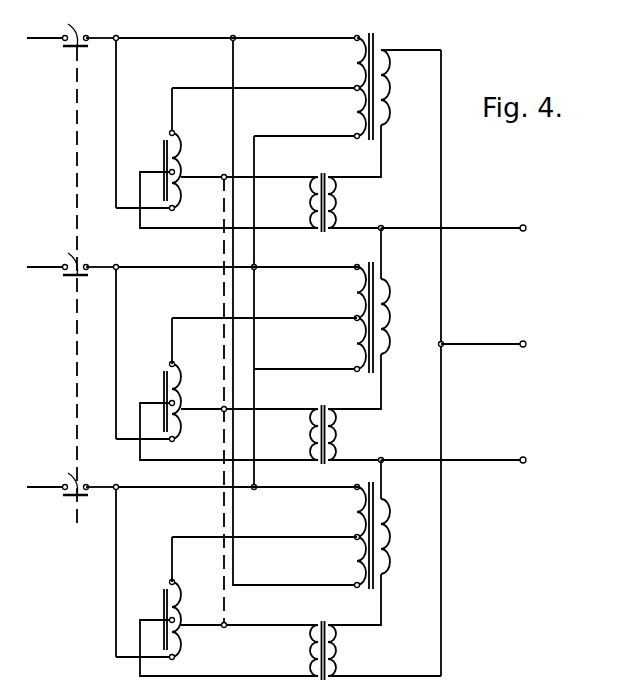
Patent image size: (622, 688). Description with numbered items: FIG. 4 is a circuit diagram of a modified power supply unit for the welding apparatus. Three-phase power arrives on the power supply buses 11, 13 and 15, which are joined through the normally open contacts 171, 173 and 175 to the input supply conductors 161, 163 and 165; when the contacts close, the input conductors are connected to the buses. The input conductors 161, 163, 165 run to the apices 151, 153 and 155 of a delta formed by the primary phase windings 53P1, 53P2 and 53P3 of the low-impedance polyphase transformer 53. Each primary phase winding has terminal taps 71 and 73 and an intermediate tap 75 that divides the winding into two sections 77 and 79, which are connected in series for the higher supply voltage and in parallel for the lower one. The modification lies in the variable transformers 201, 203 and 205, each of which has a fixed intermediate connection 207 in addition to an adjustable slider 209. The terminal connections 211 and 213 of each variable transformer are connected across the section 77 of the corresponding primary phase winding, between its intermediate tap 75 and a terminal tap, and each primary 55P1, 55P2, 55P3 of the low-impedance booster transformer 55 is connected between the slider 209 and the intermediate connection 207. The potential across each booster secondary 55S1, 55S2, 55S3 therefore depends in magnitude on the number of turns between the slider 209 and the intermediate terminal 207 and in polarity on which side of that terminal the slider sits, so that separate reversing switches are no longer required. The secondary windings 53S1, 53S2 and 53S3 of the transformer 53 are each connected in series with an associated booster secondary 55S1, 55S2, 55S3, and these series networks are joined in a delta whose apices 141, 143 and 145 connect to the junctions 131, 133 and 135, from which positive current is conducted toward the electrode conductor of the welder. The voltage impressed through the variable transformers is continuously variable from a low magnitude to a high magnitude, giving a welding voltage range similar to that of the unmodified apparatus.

The power supply bus 11 is at (48, 490).
The power supply bus 13 is at (48, 270).
The power supply bus 15 is at (48, 41).
The normally open contact 171 is at (58, 478).
The normally open contact 173 is at (58, 258).
The normally open contact 175 is at (58, 29).
The input supply conductor 161 is at (101, 487).
The input supply conductor 163 is at (101, 267).
The input supply conductor 165 is at (101, 38).
The apex of primary delta 151 is at (117, 487).
The apex of primary delta 153 is at (117, 267).
The apex of primary delta 155 is at (117, 38).
The variable transformer 201 is at (212, 578).
The variable transformer 203 is at (217, 125).
The variable transformer 205 is at (217, 355).
The fixed intermediate connection 207 is at (171, 172).
The adjustable slider 209 is at (185, 178).
The terminal connection 211 is at (171, 133).
The terminal connection 213 is at (174, 210).
The polyphase transformer 53 is at (412, 330).
The primary phase winding 53P1 is at (359, 513).
The primary phase winding 53P2 is at (359, 294).
The primary phase winding 53P3 is at (359, 64).
The secondary phase winding 53S1 is at (385, 540).
The secondary phase winding 53S2 is at (385, 303).
The secondary phase winding 53S3 is at (385, 97).
The terminal tap 71 is at (355, 36).
The terminal tap 73 is at (356, 139).
The intermediate tap 75 is at (356, 89).
The primary winding section 77 is at (360, 55).
The primary winding section 79 is at (359, 113).
The polyphase booster transformer 55 is at (330, 168).
The booster primary winding 55P1 is at (291, 650).
The booster primary winding 55P2 is at (291, 434).
The booster primary winding 55P3 is at (291, 202).
The booster secondary winding 55S1 is at (338, 649).
The booster secondary winding 55S2 is at (337, 434).
The booster secondary winding 55S3 is at (337, 206).
The apex of secondary delta 141 is at (442, 343).
The apex of secondary delta 143 is at (383, 458).
The apex of secondary delta 145 is at (383, 227).
The junction 131 is at (531, 336).
The junction 133 is at (531, 451).
The junction 135 is at (528, 218).